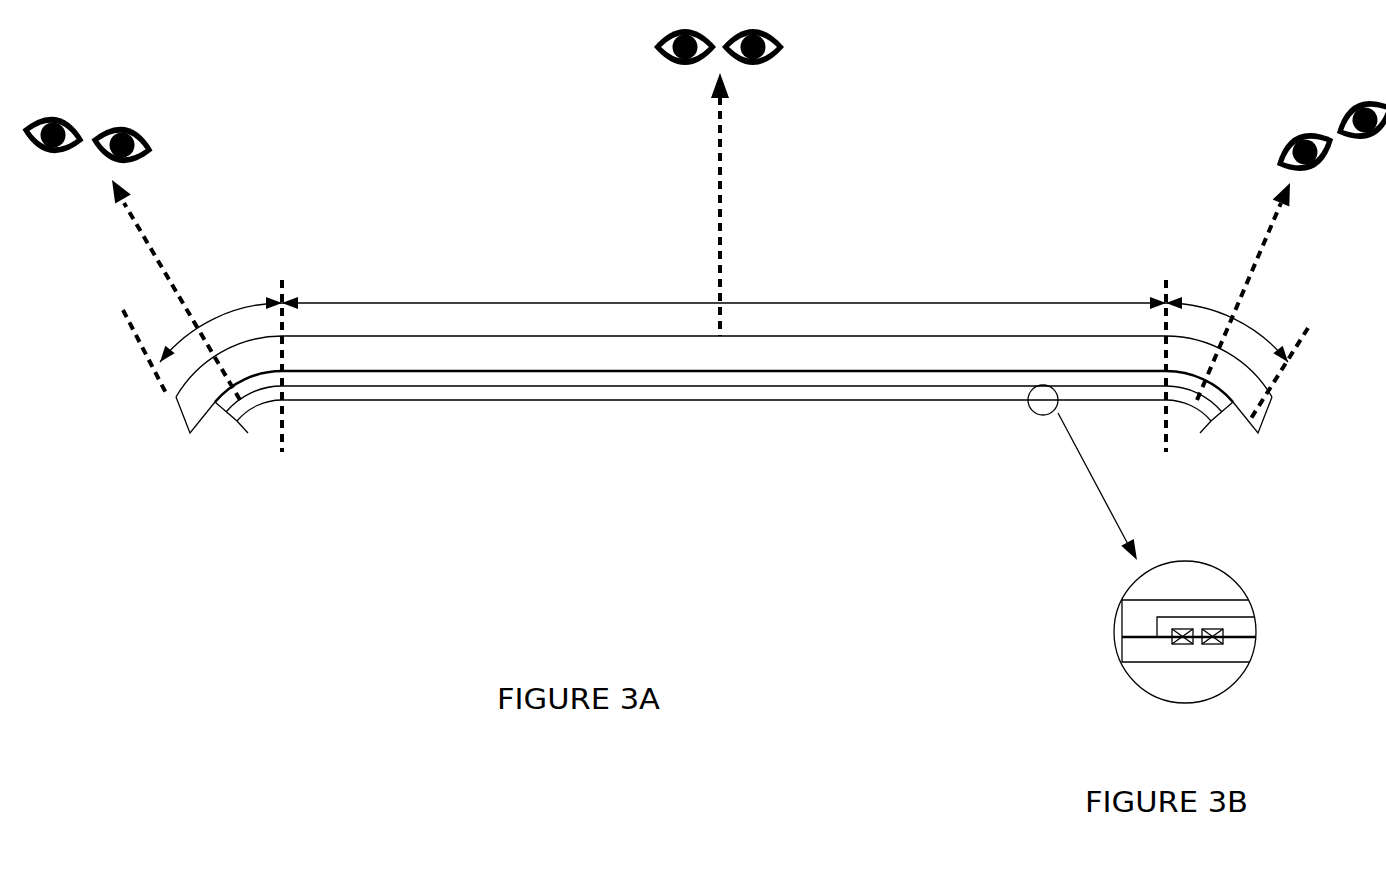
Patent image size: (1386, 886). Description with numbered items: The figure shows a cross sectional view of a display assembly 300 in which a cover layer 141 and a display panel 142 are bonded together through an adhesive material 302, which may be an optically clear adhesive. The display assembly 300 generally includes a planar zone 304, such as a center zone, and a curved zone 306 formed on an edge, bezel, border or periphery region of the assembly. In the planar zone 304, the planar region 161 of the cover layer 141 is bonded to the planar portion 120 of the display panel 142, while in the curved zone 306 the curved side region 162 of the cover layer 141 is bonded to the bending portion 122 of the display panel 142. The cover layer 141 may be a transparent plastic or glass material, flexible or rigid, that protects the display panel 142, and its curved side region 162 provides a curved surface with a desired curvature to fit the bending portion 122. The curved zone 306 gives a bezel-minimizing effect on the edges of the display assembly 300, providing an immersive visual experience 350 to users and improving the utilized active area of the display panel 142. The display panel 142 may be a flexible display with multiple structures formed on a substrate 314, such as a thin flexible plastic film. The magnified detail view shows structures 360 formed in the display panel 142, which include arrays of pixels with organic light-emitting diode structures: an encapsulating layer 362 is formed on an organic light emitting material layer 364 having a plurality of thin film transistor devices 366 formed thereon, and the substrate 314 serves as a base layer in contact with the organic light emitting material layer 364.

In FIG. 3A, the display assembly 300 is at (523, 117).
In FIG. 3A, the immersive visual experience 350 is at (173, 280).
In FIG. 3A, the planar zone 304 is at (845, 297).
In FIG. 3A, the curved zone 306 is at (240, 305).
In FIG. 3A, the cover layer 141 is at (398, 350).
In FIG. 3A, the planar region 161 is at (575, 350).
In FIG. 3A, the display panel 142 is at (443, 393).
In FIG. 3A, the planar portion 120 is at (725, 393).
In FIG. 3A, the substrate 314 is at (888, 393).
In FIG. 3B, the substrate 314 is at (1150, 647).
In FIG. 3A, the curved side region 162 is at (190, 390).
In FIG. 3A, the bending portion 122 is at (228, 430).
In FIG. 3A, the adhesive material 302 is at (1215, 407).
In FIG. 3B, the structures 360 is at (1096, 620).
In FIG. 3B, the encapsulating layer 362 is at (1197, 613).
In FIG. 3B, the organic light emitting material layer 364 is at (1238, 630).
In FIG. 3B, the thin film transistor devices 366 is at (1240, 660).